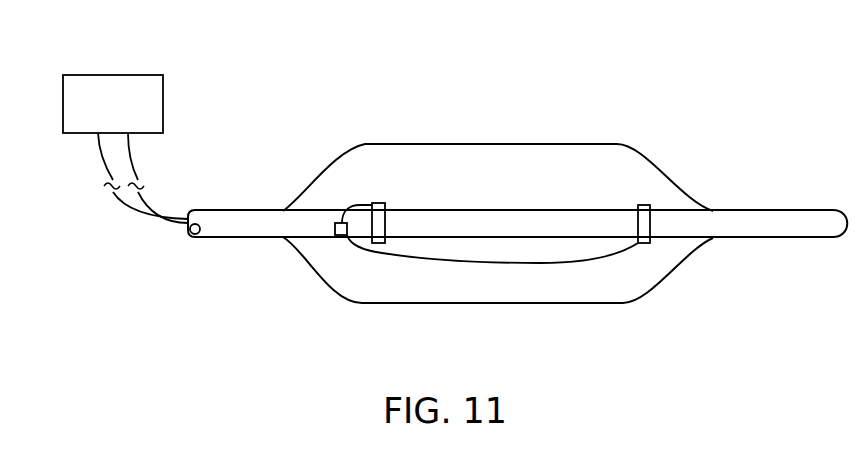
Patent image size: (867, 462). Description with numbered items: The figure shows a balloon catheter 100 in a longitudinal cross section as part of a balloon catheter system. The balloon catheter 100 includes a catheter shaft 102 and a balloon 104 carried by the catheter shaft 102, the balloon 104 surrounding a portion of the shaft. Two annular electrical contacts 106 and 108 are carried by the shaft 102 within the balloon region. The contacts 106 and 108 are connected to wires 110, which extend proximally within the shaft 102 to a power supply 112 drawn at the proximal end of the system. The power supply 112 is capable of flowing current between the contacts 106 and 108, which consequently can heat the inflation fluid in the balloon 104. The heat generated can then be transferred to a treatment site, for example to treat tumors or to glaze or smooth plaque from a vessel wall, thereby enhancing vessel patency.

The balloon catheter 100 is at (711, 90).
The catheter shaft 102 is at (768, 240).
The balloon 104 is at (627, 303).
The annular electrical contact 106 is at (645, 204).
The annular electrical contact 108 is at (377, 203).
The wires 110 is at (356, 205).
The power supply 112 is at (163, 102).